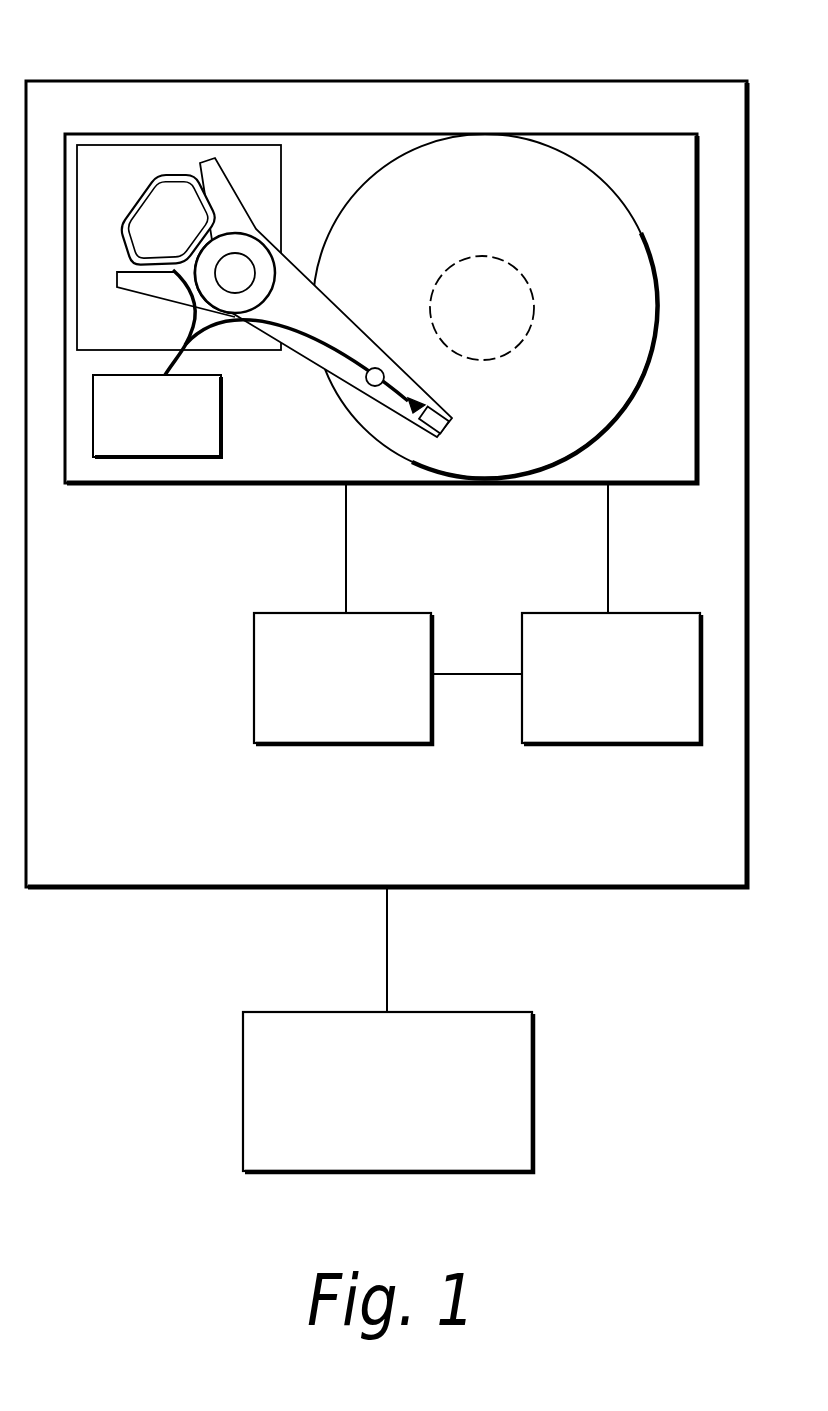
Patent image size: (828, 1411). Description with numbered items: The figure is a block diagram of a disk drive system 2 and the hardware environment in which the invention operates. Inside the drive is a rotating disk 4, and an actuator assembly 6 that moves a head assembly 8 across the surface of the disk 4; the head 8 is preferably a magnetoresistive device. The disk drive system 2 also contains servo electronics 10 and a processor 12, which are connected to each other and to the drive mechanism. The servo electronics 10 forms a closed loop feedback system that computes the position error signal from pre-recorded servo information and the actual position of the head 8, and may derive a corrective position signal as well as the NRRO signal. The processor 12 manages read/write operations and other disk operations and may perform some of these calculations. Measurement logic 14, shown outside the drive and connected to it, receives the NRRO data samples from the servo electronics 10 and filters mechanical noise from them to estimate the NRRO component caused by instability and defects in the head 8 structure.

The disk drive system 2 is at (227, 80).
The rotating disk 4 is at (511, 226).
The actuator assembly 6 is at (305, 360).
The head assembly 8 is at (428, 440).
The servo electronics 10 is at (343, 678).
The processor 12 is at (611, 678).
The measurement logic 14 is at (388, 1092).